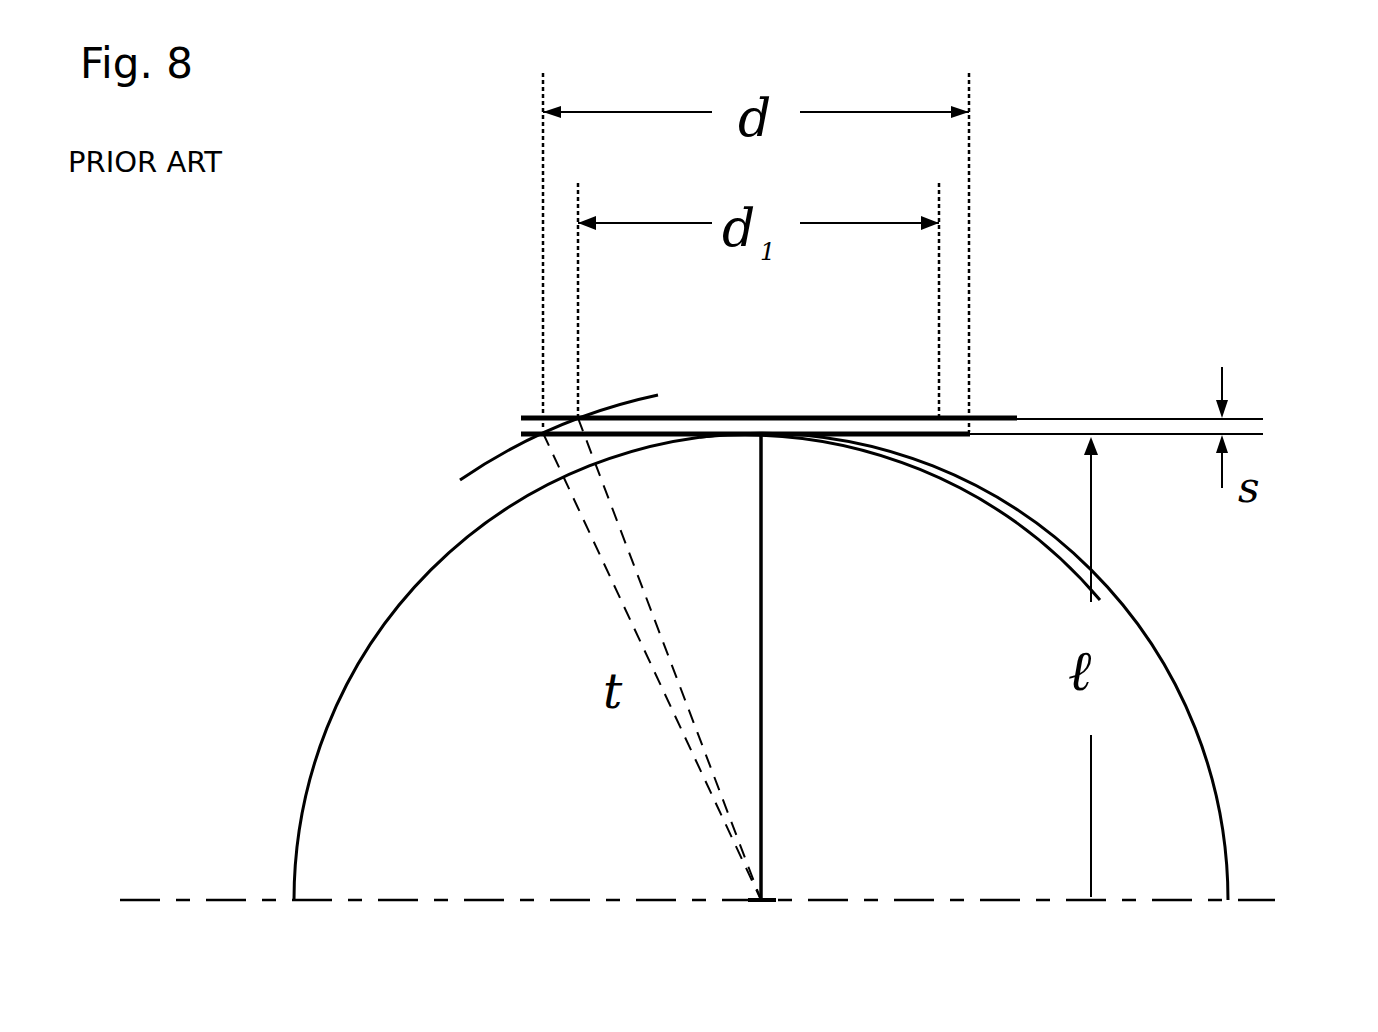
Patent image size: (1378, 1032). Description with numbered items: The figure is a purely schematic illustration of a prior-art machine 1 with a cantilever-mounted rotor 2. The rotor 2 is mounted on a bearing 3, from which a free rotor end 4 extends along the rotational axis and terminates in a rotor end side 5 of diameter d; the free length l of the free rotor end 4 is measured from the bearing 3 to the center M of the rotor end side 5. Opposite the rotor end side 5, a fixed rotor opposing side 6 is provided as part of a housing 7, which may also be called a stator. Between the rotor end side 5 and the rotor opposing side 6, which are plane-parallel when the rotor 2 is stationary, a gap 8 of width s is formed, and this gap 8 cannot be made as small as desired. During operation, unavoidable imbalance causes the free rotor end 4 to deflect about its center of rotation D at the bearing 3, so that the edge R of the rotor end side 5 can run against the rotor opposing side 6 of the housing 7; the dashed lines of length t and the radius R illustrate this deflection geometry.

The machine 1 is at (278, 558).
The rotor 2 is at (885, 598).
The bearing 3 is at (783, 874).
The free rotor end 4 is at (742, 680).
The rotor end side 5 is at (717, 413).
The rotor opposing side 6 is at (995, 455).
The housing 7 is at (1112, 408).
The gap 8 is at (1283, 426).